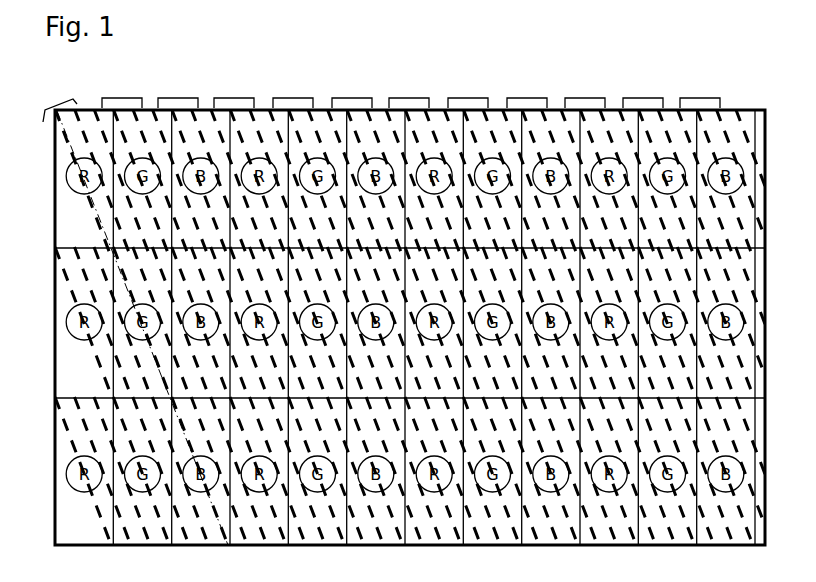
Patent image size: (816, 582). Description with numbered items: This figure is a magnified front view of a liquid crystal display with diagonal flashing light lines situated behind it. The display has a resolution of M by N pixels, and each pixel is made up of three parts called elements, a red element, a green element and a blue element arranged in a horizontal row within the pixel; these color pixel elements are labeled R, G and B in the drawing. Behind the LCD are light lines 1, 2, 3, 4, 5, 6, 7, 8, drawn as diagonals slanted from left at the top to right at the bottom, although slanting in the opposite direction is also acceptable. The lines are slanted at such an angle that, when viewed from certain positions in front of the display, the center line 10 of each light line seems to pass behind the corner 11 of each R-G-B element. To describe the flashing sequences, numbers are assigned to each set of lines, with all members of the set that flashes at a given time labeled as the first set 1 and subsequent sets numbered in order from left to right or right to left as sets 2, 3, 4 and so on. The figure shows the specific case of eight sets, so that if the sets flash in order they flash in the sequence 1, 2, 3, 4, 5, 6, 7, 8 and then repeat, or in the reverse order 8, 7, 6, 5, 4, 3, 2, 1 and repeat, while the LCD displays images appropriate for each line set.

The light line set 1 is at (53, 104).
The light line set 2 is at (122, 98).
The light line set 3 is at (178, 98).
The light line set 4 is at (234, 98).
The light line set 5 is at (293, 98).
The light line set 6 is at (352, 98).
The light line set 7 is at (409, 98).
The light line set 8 is at (468, 98).
The center line 10 is at (68, 130).
The corner 11 is at (56, 109).